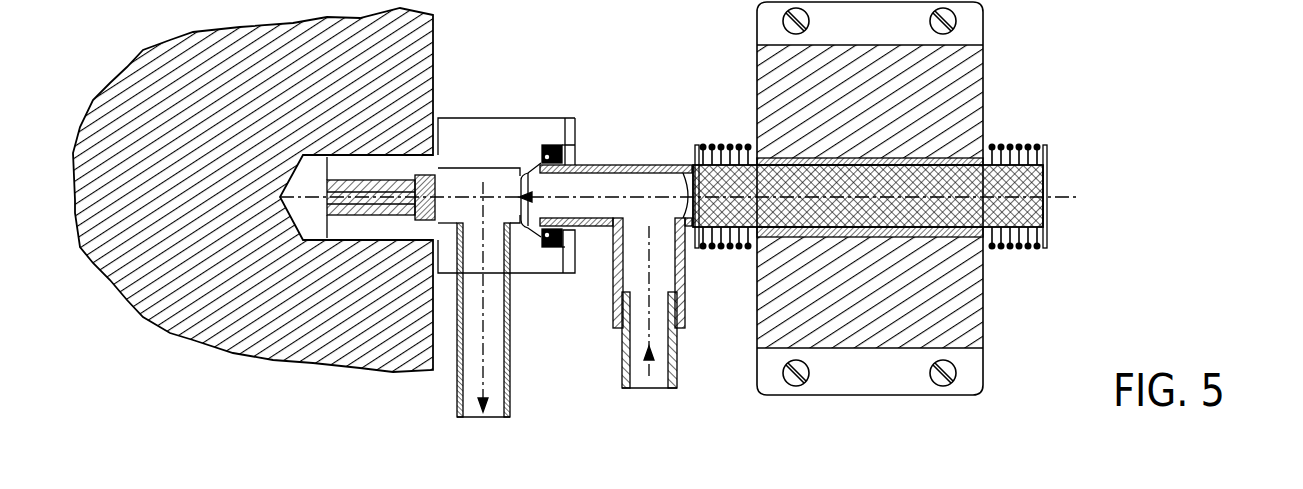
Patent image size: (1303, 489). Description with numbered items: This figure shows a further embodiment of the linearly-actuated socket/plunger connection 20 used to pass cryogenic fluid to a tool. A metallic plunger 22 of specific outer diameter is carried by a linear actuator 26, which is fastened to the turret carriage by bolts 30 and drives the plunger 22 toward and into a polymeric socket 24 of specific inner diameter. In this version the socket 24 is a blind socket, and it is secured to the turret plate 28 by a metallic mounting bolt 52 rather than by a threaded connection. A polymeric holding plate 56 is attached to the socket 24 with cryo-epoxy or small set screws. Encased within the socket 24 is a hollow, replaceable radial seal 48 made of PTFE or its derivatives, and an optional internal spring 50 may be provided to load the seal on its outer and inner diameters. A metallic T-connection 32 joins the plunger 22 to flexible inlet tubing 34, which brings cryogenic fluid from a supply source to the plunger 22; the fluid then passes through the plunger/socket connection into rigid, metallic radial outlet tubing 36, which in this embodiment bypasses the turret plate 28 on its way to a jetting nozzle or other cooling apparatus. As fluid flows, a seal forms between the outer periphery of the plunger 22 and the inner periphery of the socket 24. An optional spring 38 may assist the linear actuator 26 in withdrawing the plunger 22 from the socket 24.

The linearly-actuated socket/plunger connection 20 is at (1144, 113).
The plunger 22 is at (653, 163).
The socket 24 is at (517, 118).
The linear actuator 26 is at (977, 77).
The turret plate 28 is at (172, 53).
The bolts 30 is at (787, 367).
The T-connection 32 is at (688, 294).
The inlet tubing 34 is at (622, 370).
The outlet tubing 36 is at (457, 414).
The spring 38 is at (1027, 250).
The radial seal 48 is at (558, 248).
The internal spring 50 is at (571, 152).
The mounting bolt 52 is at (455, 170).
The holding plate 56 is at (568, 140).